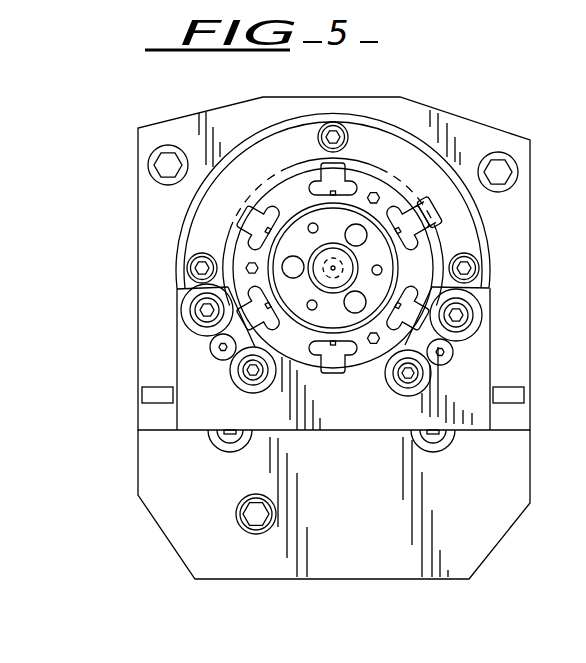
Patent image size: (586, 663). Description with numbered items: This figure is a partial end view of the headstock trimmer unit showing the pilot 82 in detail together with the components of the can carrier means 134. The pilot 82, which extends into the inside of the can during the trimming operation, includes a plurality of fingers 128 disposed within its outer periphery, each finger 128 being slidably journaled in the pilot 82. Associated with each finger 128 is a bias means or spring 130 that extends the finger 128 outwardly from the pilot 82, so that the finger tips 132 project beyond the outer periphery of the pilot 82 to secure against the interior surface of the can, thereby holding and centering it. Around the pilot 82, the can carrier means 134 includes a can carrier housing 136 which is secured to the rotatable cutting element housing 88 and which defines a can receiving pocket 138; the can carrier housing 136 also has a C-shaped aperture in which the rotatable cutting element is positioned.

The pilot 82 is at (299, 172).
The housing 88 is at (505, 477).
The fingers 128 is at (414, 220).
The spring 130 is at (405, 236).
The finger tips 132 is at (422, 226).
The can carrier means 134 is at (152, 311).
The can carrier housing 136 is at (478, 347).
The can receiving pocket 138 is at (240, 340).